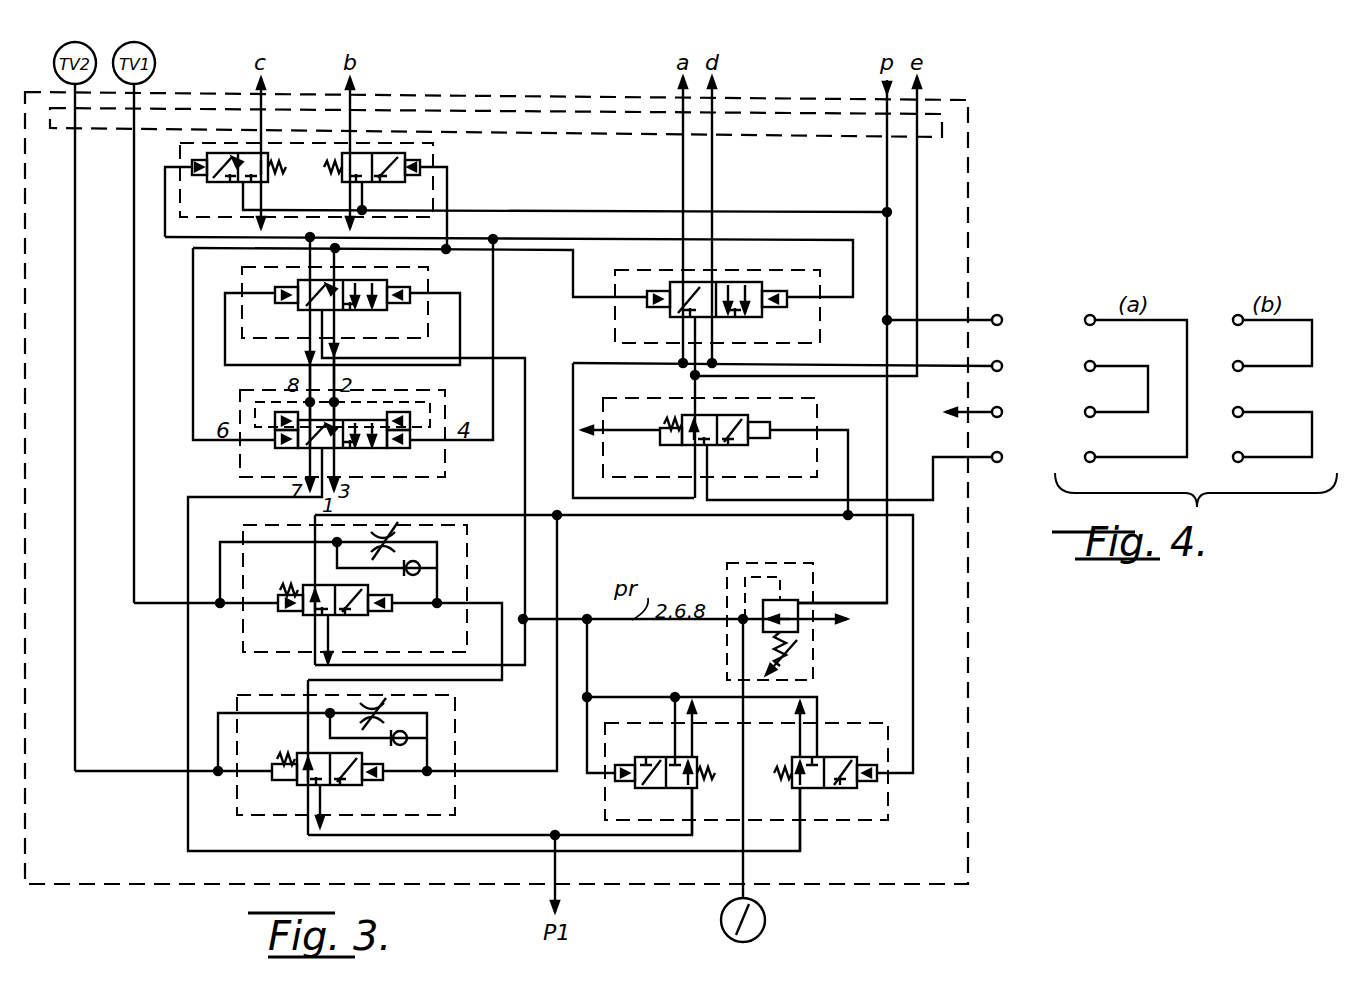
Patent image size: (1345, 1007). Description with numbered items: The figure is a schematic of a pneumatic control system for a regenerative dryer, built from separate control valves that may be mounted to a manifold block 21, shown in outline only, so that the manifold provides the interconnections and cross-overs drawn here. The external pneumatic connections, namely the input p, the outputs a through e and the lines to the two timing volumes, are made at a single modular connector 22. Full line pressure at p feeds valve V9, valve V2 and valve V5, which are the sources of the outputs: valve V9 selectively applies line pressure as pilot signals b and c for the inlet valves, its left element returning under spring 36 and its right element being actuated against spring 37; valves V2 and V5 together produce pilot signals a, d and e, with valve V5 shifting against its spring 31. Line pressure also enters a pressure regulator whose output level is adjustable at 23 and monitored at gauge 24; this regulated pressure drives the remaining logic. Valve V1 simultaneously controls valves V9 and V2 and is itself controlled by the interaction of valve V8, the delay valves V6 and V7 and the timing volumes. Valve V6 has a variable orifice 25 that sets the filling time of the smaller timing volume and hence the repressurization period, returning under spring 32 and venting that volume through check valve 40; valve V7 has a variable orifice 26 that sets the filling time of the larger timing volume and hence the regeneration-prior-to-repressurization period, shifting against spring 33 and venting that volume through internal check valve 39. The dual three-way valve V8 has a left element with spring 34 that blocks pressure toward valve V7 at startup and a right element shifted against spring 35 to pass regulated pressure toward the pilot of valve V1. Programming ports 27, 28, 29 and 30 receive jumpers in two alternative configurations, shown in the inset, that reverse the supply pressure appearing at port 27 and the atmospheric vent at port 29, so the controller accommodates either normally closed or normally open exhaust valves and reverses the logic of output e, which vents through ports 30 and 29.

The manifold block 21 is at (972, 168).
The modular connector 22 is at (942, 128).
The pressure regulator adjustment 23 is at (785, 652).
The gauge 24 is at (758, 936).
The variable orifice 25 is at (398, 522).
The variable orifice 26 is at (386, 698).
The programming port 27 is at (1022, 320).
The programming port 28 is at (1022, 366).
The programming port 29 is at (1022, 412).
The programming port 30 is at (1022, 457).
The spring 31 is at (674, 411).
The spring 32 is at (292, 578).
The spring 33 is at (288, 747).
The spring 34 is at (711, 789).
The spring 35 is at (772, 789).
The spring 36 is at (285, 181).
The spring 37 is at (325, 181).
The internal check valve 39 is at (406, 733).
The check valve 40 is at (418, 563).
The four-way valve V1 is at (440, 305).
The four-way valve V2 is at (613, 314).
The three-way valve V5 is at (782, 439).
The three-way delay valve V6 is at (318, 584).
The three-way delay valve V7 is at (316, 678).
The dual three-way valve V8 is at (750, 744).
The dual three-way valve V9 is at (522, 187).